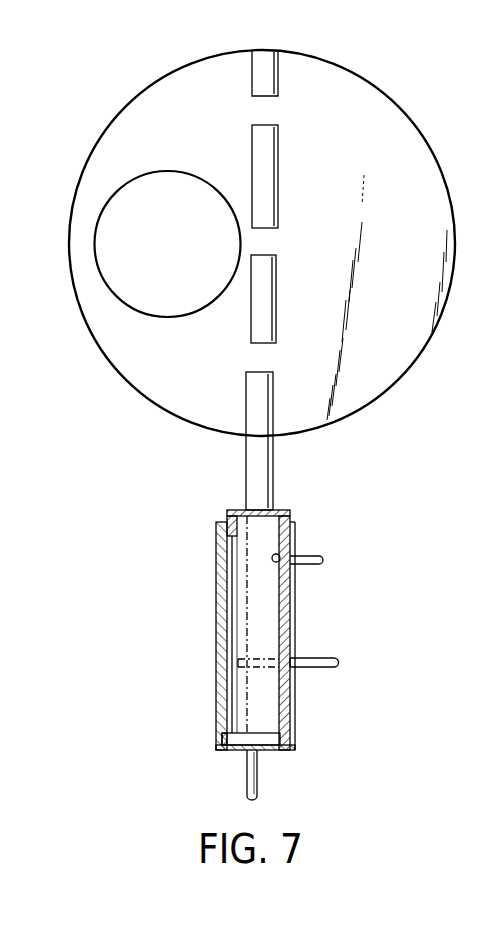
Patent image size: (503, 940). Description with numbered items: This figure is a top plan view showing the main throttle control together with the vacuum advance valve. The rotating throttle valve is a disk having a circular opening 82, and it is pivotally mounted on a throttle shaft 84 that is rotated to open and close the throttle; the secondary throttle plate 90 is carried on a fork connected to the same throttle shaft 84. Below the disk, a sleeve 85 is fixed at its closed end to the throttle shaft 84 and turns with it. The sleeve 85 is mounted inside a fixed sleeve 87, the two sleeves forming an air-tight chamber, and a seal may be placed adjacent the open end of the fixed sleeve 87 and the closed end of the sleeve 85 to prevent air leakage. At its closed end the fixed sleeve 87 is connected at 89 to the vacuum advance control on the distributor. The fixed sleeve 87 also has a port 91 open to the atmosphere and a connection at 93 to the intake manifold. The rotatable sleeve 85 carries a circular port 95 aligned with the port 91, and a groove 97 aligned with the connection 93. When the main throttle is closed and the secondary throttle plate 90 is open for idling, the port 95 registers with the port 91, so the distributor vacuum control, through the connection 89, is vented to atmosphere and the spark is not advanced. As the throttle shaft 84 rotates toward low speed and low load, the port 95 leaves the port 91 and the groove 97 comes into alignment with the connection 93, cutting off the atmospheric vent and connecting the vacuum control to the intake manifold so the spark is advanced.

The secondary throttle plate 90 is at (122, 72).
The circular opening 82 is at (100, 237).
The throttle shaft 84 is at (268, 473).
The sleeve 85 is at (227, 512).
The circular port 95 is at (280, 556).
The port 91 is at (310, 556).
The groove 97 is at (262, 657).
The connection to intake manifold 93 is at (325, 657).
The fixed sleeve 87 is at (220, 738).
The connection to vacuum advance control 89 is at (248, 778).